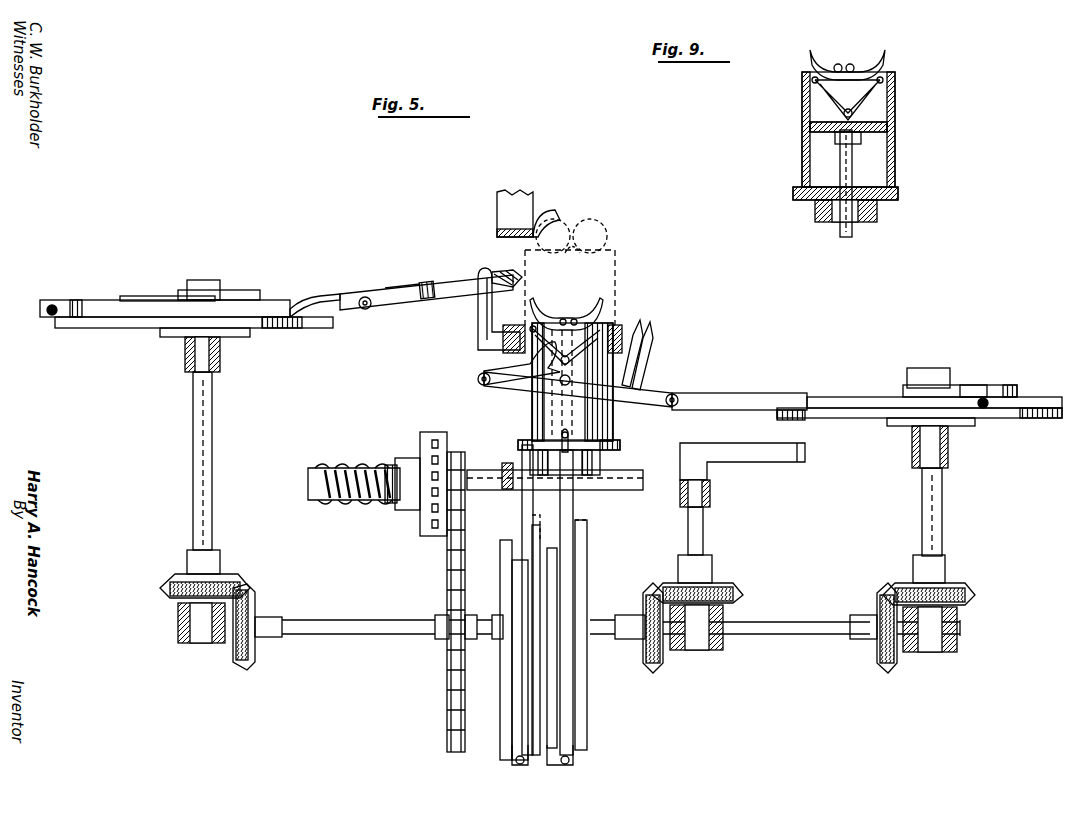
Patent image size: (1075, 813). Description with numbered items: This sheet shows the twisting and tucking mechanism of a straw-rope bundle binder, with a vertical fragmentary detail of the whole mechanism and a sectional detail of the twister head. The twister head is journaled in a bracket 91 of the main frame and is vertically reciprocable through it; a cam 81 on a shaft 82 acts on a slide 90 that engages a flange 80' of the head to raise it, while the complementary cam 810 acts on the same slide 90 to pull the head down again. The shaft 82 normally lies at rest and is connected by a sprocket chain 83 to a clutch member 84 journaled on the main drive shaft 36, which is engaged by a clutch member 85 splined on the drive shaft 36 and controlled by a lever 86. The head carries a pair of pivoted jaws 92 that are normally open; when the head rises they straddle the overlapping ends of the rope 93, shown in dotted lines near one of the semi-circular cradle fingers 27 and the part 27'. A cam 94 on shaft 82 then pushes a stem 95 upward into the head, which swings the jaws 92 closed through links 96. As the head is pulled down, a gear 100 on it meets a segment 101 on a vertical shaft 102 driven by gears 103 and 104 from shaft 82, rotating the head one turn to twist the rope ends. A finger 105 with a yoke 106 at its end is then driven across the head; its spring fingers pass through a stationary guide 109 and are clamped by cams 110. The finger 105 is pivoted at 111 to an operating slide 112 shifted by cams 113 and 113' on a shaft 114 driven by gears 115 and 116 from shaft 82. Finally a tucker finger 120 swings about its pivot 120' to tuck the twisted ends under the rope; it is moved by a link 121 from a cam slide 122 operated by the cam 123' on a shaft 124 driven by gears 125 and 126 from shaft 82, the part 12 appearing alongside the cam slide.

In FIG. 5, the shaft 12 is at (1030, 410).
In FIG. 5, the semi-circular finger 27 is at (492, 213).
In FIG. 5, the curved guide 27' is at (556, 201).
In FIG. 5, the main drive shaft 36 is at (608, 493).
In FIG. 5, the flange 80' is at (593, 439).
In FIG. 5, the cam 81 is at (536, 757).
In FIG. 5, the shaft 82 is at (370, 641).
In FIG. 5, the sprocket chain 83 is at (447, 548).
In FIG. 5, the clutch member 84 is at (434, 430).
In FIG. 5, the clutch member 85 is at (407, 460).
In FIG. 5, the lever 86 is at (403, 510).
In FIG. 5, the slide 90 is at (522, 512).
In FIG. 5, the bracket 91 is at (617, 330).
In FIG. 5, the pivoted jaws 92 is at (548, 318).
In FIG. 9, the pivoted jaws 92 is at (822, 66).
In FIG. 5, the rope 93 is at (572, 220).
In FIG. 5, the cam 94 is at (590, 665).
In FIG. 5, the stem 95 is at (575, 724).
In FIG. 9, the stem 95 is at (852, 230).
In FIG. 9, the links 96 is at (832, 100).
In FIG. 5, the gear 100 is at (600, 463).
In FIG. 9, the gear 100 is at (815, 215).
In FIG. 5, the segment 101 is at (776, 462).
In FIG. 5, the vertical shaft 102 is at (705, 530).
In FIG. 5, the gear 103 is at (730, 583).
In FIG. 5, the gear 104 is at (645, 590).
In FIG. 5, the finger 105 is at (445, 280).
In FIG. 5, the yoke 106 is at (503, 275).
In FIG. 5, the stationary guide 109 is at (480, 318).
In FIG. 5, the cam 110 is at (400, 294).
In FIG. 5, the pivot 111 is at (366, 296).
In FIG. 5, the operating slide 112 is at (296, 298).
In FIG. 5, the cam 113 is at (186, 334).
In FIG. 5, the cam 113' is at (167, 282).
In FIG. 5, the shaft 114 is at (213, 432).
In FIG. 5, the gear 115 is at (240, 575).
In FIG. 5, the gear 116 is at (257, 598).
In FIG. 5, the tucker finger 120 is at (663, 355).
In FIG. 5, the pivot 120' is at (494, 360).
In FIG. 5, the link 121 is at (655, 396).
In FIG. 5, the cam slide 122 is at (766, 395).
In FIG. 5, the cam 123' is at (1009, 380).
In FIG. 5, the shaft 124 is at (943, 518).
In FIG. 5, the gear 125 is at (897, 586).
In FIG. 5, the gear 126 is at (877, 600).
In FIG. 5, the cam 810 is at (500, 685).